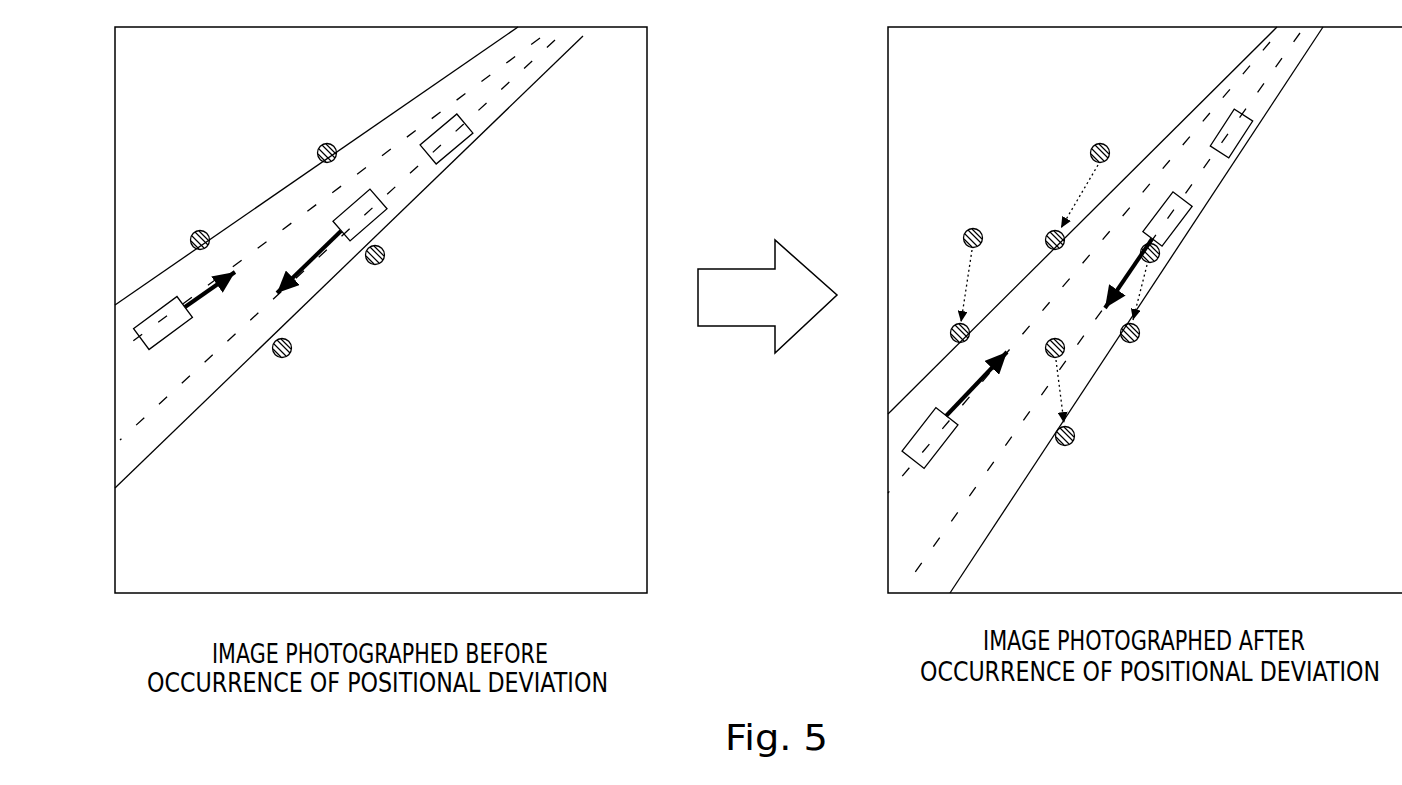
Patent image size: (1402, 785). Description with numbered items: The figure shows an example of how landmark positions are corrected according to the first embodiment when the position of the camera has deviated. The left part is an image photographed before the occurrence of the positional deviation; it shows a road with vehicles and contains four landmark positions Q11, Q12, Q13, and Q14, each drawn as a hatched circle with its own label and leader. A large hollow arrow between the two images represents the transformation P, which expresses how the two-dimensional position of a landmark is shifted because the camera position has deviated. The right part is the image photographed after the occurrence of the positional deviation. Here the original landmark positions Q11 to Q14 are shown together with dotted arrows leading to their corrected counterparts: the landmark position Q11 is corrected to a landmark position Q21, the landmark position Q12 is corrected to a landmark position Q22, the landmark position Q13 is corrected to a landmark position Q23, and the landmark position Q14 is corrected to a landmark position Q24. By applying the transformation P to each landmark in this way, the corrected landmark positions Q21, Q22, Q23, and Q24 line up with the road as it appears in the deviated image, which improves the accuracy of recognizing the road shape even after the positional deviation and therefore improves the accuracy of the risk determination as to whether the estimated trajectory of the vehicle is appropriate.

The transformation P is at (742, 265).
The landmark position Q11 is at (200, 228).
The landmark position Q12 is at (327, 142).
The landmark position Q13 is at (283, 358).
The landmark position Q14 is at (377, 265).
The landmark position Q21 is at (950, 326).
The landmark position Q22 is at (1050, 228).
The landmark position Q23 is at (1068, 448).
The landmark position Q24 is at (1141, 338).